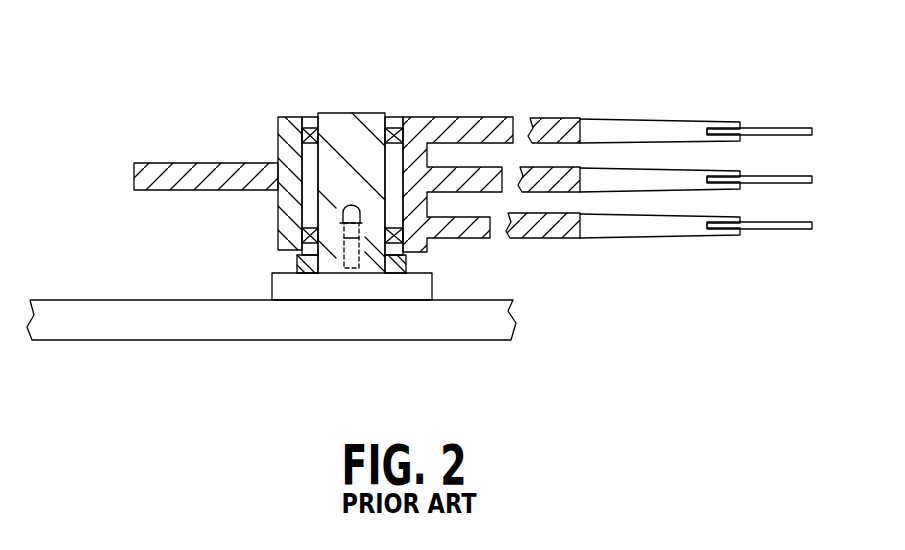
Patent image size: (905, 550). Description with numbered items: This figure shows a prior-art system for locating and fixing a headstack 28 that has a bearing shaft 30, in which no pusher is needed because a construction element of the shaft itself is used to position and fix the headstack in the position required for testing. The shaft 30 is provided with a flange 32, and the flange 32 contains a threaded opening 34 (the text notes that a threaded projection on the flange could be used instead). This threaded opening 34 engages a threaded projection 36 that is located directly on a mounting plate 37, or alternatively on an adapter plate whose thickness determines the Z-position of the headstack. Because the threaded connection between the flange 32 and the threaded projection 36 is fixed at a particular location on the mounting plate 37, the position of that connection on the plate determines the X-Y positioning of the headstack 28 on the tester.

The headstack 28 is at (663, 108).
The bearing shaft 30 is at (361, 100).
The flange 32 is at (408, 262).
The threaded opening 34 is at (338, 230).
The threaded projection 36 is at (352, 268).
The mounting plate 37 is at (130, 320).